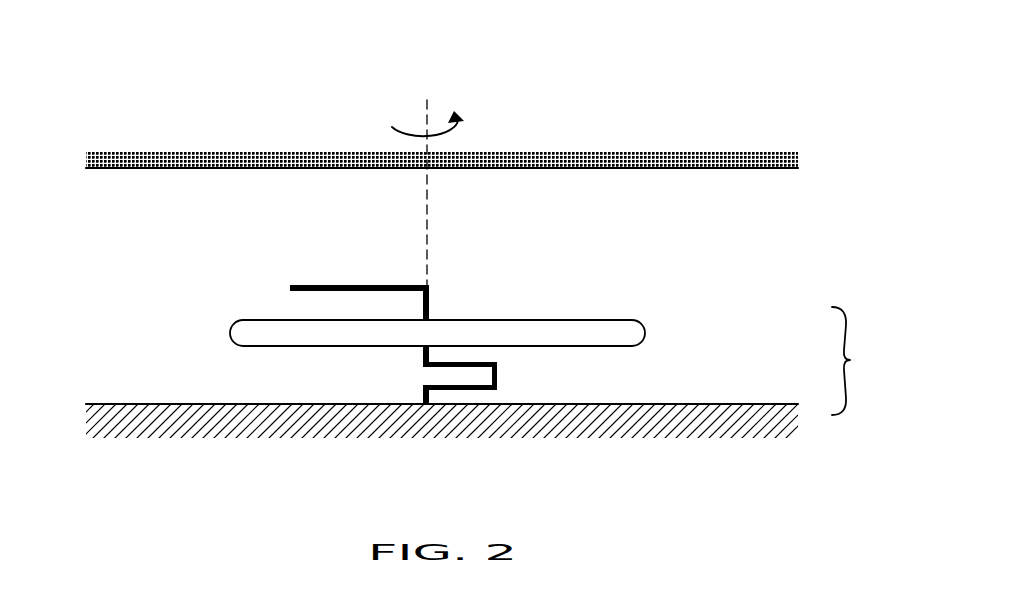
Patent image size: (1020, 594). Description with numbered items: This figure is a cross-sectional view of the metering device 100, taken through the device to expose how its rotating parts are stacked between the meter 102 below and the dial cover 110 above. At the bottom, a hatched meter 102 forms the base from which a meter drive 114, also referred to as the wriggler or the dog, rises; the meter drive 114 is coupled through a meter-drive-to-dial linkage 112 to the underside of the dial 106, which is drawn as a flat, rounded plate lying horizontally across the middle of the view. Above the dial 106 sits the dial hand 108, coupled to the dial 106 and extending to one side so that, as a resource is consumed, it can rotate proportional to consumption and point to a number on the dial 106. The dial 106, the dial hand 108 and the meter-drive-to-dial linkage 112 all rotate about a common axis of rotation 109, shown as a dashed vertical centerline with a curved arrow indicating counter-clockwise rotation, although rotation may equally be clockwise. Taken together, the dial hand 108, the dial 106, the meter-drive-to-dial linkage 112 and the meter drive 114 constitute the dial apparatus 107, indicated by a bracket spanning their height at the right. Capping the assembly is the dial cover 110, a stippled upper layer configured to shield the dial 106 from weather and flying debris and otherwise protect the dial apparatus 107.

The metering device 100 is at (695, 82).
The meter 102 is at (212, 425).
The dial 106 is at (647, 340).
The dial apparatus 107 is at (862, 361).
The dial hand 108 is at (318, 284).
The axis of rotation 109 is at (428, 179).
The dial cover 110 is at (765, 168).
The meter-drive-to-dial linkage 112 is at (497, 364).
The meter drive 114 is at (497, 388).